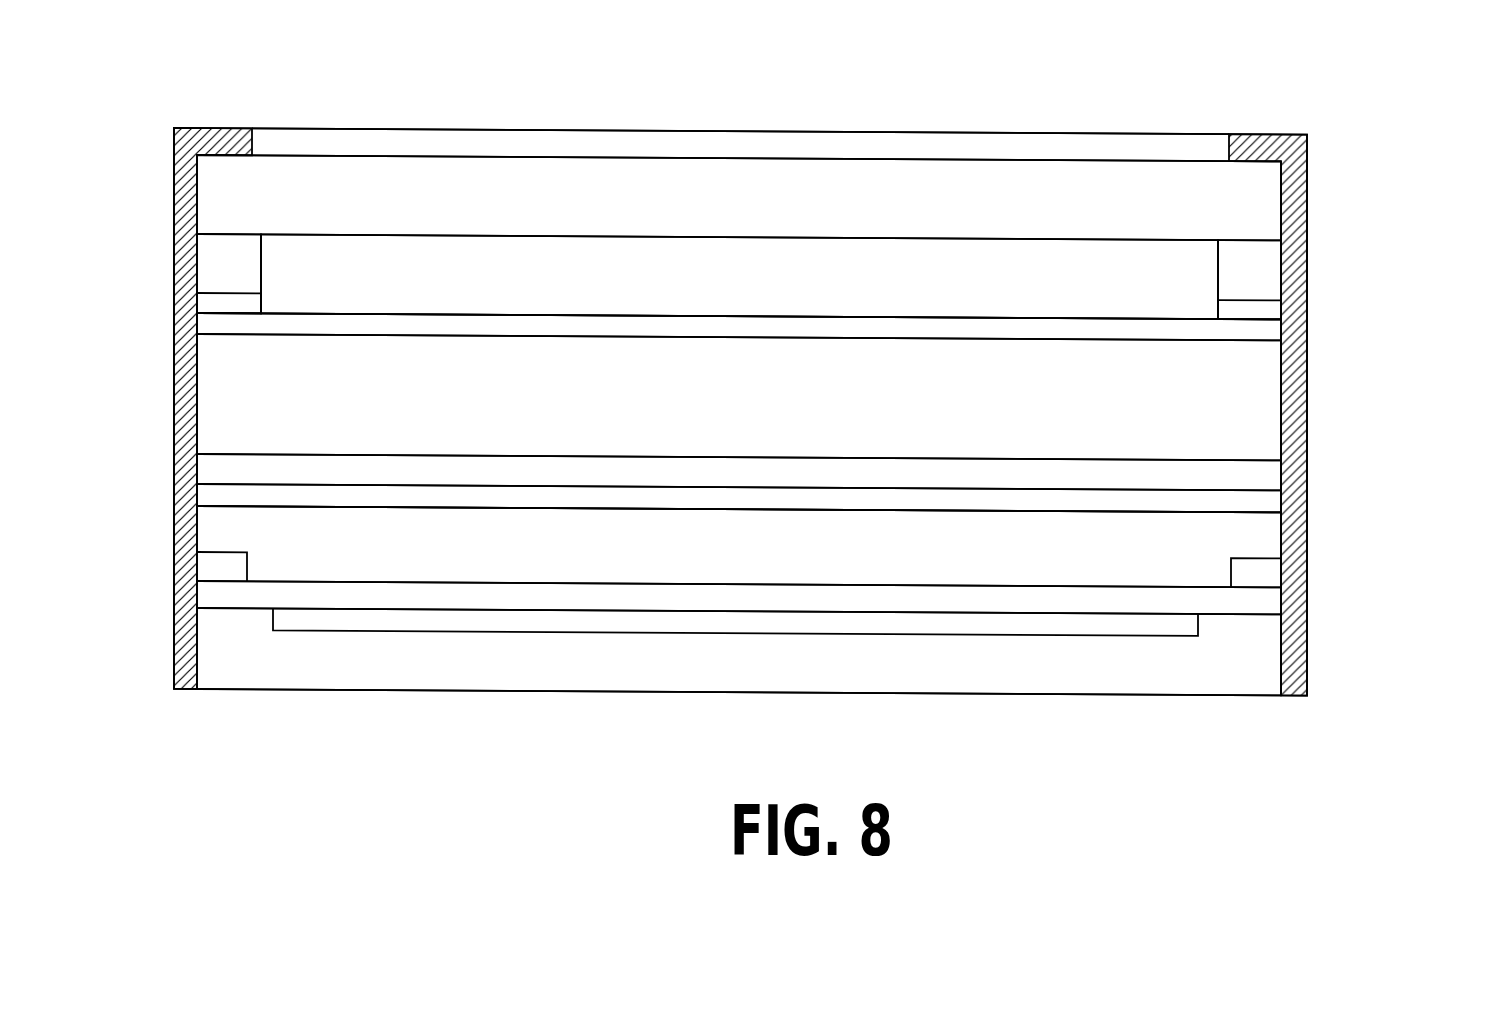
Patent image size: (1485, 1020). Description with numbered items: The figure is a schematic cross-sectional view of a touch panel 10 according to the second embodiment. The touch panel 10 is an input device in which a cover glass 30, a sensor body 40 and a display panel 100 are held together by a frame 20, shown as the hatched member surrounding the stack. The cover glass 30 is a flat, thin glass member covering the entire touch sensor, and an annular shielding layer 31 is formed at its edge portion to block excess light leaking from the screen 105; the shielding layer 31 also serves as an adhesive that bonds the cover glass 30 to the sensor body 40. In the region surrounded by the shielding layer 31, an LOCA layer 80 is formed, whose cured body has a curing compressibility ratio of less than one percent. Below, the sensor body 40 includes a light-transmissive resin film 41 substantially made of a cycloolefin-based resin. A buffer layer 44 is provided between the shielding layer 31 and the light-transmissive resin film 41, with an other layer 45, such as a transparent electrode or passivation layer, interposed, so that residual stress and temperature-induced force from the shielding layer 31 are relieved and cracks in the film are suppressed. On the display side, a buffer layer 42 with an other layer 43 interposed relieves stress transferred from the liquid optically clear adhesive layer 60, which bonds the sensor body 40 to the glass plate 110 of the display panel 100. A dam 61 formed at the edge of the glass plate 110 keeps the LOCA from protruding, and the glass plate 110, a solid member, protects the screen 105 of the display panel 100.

The touch panel 10 is at (720, 108).
The frame 20 is at (1300, 141).
The cover glass 30 is at (1237, 211).
The shielding layer 31 is at (1263, 258).
The buffer layer 44 is at (1268, 312).
The LOCA layer 80 is at (1077, 283).
The other layer 45 is at (1251, 333).
The light-transmissive resin film 41 is at (1251, 428).
The other layer 43 is at (1257, 471).
The buffer layer 42 is at (1252, 503).
The sensor body 40 is at (1356, 520).
The liquid optically clear adhesive layer 60 is at (1263, 542).
The dam 61 is at (1259, 575).
The glass plate 110 is at (1258, 605).
The screen 105 is at (1192, 627).
The display panel 100 is at (1378, 595).